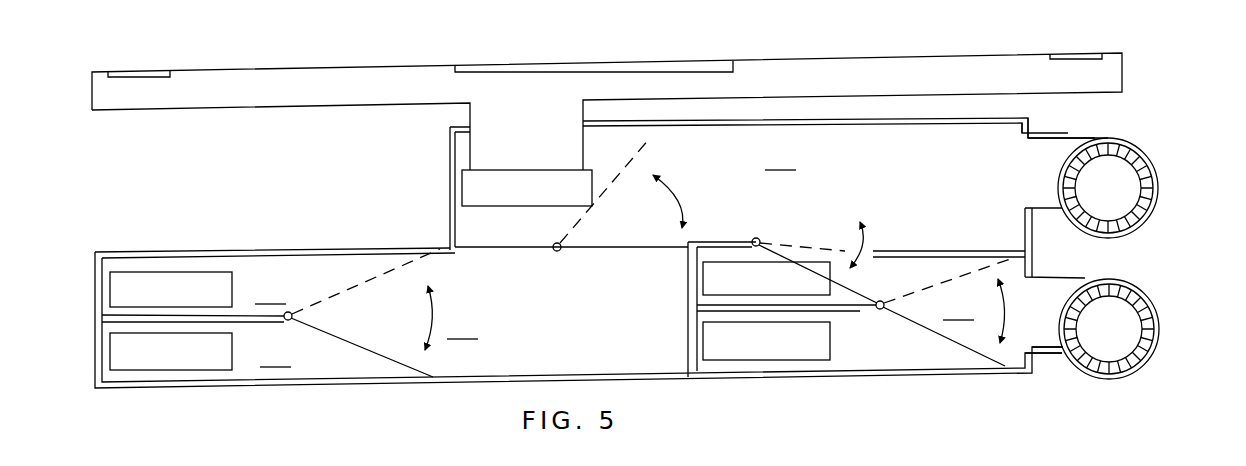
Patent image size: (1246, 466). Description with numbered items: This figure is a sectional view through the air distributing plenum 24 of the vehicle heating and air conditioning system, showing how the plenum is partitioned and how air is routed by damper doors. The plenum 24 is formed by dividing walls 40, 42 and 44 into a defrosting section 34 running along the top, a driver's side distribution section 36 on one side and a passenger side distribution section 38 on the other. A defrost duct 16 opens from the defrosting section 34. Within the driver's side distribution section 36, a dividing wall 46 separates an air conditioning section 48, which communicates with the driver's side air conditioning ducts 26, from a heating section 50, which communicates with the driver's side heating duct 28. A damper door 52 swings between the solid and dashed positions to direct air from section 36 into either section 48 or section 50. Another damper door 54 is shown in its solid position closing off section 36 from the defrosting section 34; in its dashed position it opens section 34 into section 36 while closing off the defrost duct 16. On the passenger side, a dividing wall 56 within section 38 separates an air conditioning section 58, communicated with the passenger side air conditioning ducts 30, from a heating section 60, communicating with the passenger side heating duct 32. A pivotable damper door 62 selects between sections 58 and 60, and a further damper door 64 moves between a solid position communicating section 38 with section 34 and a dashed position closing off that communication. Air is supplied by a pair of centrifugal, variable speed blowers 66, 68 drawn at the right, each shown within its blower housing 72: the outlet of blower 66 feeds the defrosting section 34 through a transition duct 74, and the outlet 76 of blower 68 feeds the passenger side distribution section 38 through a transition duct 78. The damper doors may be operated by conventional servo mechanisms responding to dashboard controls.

The defrost duct 16 is at (540, 128).
The air distributing plenum 24 is at (379, 245).
The driver's side air conditioning ducts 26 is at (212, 278).
The driver's side heating duct 28 is at (217, 362).
The passenger side air conditioning ducts 30 is at (717, 284).
The passenger side heating duct 32 is at (713, 350).
The defrosting section 34 is at (839, 144).
The driver's side distribution section 36 is at (451, 318).
The passenger side distribution section 38 is at (973, 311).
The dividing wall 40 is at (552, 252).
The dividing wall 42 is at (730, 240).
The dividing wall 44 is at (695, 283).
The dividing wall 46 is at (120, 318).
The air conditioning section 48 is at (270, 288).
The heating section 50 is at (275, 351).
The damper door 52 is at (356, 347).
The damper door 54 is at (604, 250).
The dividing wall 56 is at (847, 309).
The air conditioning section 58 is at (752, 257).
The heating section 60 is at (762, 362).
The damper door 62 is at (942, 337).
The damper door 64 is at (853, 277).
The centrifugal variable speed blower 66 is at (1128, 190).
The centrifugal variable speed blower 68 is at (1127, 330).
The blower housing 72 is at (1080, 143).
The transition duct 74 is at (1032, 148).
The outlet 76 is at (1062, 272).
The transition duct 78 is at (1033, 350).